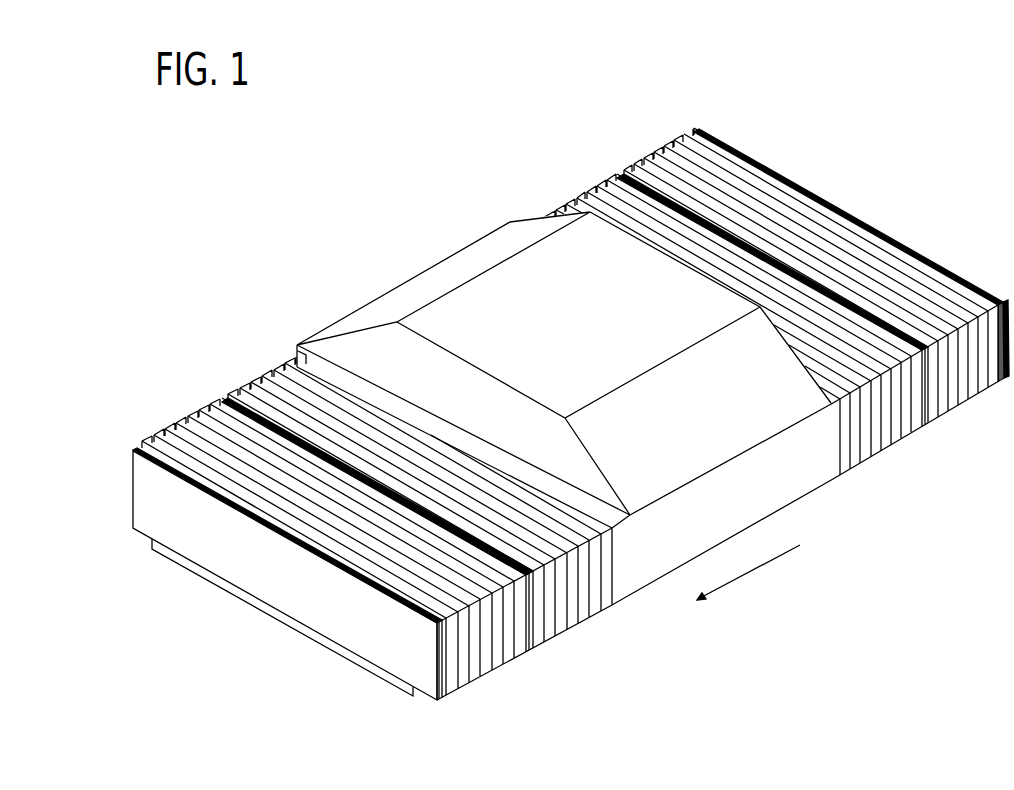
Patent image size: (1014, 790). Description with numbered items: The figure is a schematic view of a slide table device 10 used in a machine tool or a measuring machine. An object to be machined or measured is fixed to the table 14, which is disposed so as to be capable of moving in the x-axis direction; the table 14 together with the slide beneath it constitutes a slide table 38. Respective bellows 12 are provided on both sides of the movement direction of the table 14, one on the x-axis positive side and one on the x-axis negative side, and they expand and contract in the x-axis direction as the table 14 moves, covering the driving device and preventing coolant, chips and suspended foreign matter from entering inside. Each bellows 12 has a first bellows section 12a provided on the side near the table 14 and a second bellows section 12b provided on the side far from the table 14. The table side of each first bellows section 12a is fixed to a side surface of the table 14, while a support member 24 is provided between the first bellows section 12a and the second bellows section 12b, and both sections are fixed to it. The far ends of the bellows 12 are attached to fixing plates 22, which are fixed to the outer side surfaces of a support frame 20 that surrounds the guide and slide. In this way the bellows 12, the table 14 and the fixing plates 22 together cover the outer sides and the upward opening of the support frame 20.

The slide table device 10 is at (380, 186).
The bellows 12 is at (557, 376).
The first bellows section 12a is at (589, 207).
The second bellows section 12b is at (700, 134).
The table 14 is at (565, 408).
The support frame 20 is at (180, 561).
The fixing plate 22 is at (870, 220).
The support member 24 is at (927, 385).
The slide table 38 is at (372, 270).